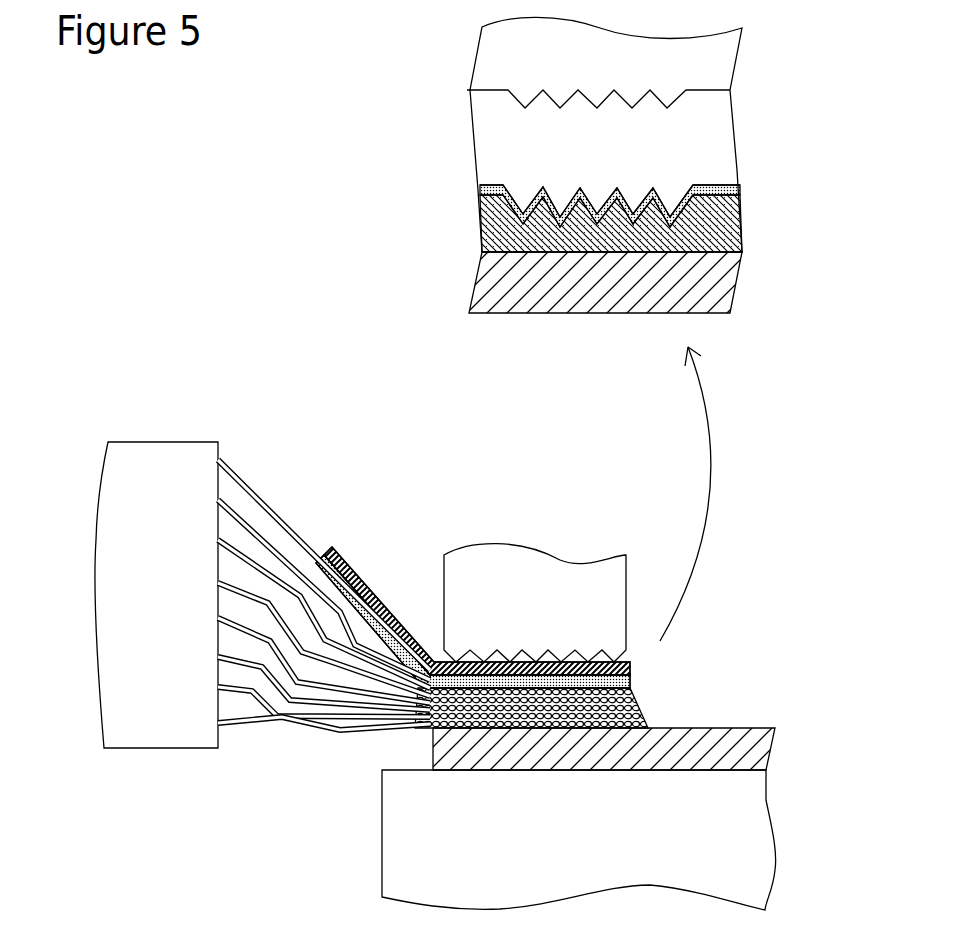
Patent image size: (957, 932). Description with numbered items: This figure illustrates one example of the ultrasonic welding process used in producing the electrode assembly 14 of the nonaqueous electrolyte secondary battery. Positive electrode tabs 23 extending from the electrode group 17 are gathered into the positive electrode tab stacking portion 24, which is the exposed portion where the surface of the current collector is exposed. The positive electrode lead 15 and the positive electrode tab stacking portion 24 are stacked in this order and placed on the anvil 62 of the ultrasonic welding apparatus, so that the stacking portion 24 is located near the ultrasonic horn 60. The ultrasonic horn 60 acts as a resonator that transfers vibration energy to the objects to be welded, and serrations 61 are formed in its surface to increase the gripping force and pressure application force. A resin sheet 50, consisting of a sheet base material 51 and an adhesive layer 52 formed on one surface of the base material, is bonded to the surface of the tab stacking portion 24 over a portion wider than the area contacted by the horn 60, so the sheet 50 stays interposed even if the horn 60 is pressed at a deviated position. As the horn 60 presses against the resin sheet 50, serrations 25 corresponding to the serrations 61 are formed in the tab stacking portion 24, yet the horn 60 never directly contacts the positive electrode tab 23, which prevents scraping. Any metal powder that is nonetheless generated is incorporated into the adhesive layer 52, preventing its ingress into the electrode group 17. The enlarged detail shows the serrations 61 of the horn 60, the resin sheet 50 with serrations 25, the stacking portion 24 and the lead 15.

The electrode assembly 14 is at (768, 585).
The positive electrode lead 15 is at (742, 286).
The electrode group 17 is at (152, 601).
The positive electrode tab 23 is at (250, 517).
The positive electrode tab stacking portion 24 is at (742, 225).
The serrations 25 is at (488, 178).
The resin sheet 50 is at (738, 182).
The sheet base material 51 is at (368, 590).
The adhesive layer 52 is at (402, 607).
The ultrasonic horn 60 is at (588, 70).
The serrations 61 is at (516, 108).
The anvil 62 is at (564, 844).